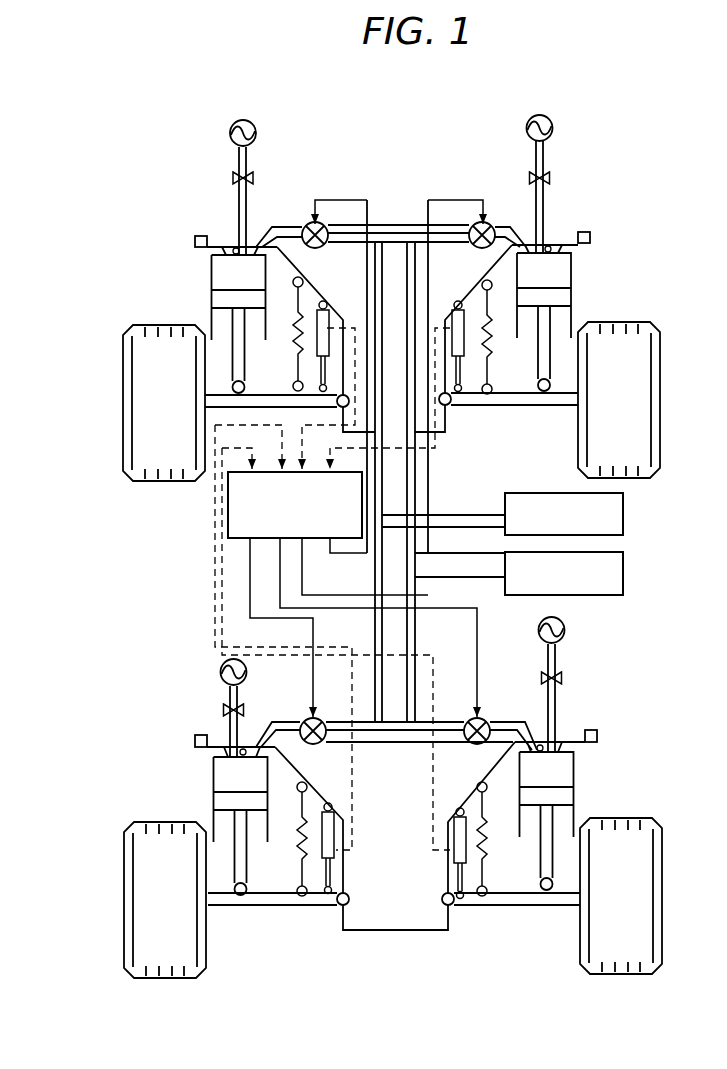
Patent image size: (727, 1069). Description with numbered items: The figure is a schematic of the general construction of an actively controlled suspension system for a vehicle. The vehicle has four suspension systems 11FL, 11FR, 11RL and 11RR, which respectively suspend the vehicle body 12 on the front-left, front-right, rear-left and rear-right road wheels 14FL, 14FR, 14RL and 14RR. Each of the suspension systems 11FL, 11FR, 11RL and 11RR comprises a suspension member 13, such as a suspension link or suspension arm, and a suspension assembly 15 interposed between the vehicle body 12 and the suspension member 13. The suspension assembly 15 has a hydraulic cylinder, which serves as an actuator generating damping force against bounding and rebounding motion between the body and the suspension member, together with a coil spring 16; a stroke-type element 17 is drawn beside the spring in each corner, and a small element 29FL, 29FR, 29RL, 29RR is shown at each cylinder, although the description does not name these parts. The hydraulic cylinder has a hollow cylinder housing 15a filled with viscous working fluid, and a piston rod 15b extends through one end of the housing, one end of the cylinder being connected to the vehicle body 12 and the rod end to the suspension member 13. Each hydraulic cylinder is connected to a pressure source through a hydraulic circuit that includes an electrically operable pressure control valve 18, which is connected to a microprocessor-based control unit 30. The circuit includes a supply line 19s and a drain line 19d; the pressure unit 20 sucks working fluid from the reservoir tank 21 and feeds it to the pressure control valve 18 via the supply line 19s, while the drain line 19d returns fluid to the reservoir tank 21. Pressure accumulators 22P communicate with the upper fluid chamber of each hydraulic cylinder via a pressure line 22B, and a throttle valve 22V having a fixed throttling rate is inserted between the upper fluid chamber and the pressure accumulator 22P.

The rear-right suspension system 11RR is at (190, 266).
The rear-left suspension system 11RL is at (598, 270).
The front-right suspension system 11FR is at (195, 780).
The front-left suspension system 11FL is at (588, 776).
The vehicle body 12 is at (444, 434).
The suspension member 13 is at (258, 403).
The rear-right road wheel 14RR is at (138, 352).
The rear-left road wheel 14RL is at (620, 323).
The front-right road wheel 14FR is at (140, 900).
The front-left road wheel 14FL is at (602, 975).
The suspension assembly 15 is at (212, 308).
The cylinder housing 15a is at (230, 253).
The piston rod 15b is at (548, 368).
The coil spring 16 is at (295, 338).
The shock absorber / stroke sensor 17 is at (328, 315).
The pressure control valve 18 is at (306, 223).
The supply line 19s is at (378, 614).
The drain line 19d is at (413, 636).
The pressure unit 20 is at (533, 493).
The reservoir tank 21 is at (505, 562).
The pressure accumulator 22P is at (254, 126).
The throttle valve 22V is at (235, 178).
The pressure line 22B is at (239, 207).
The rear right pressure sensor 29RR is at (196, 238).
The rear left pressure sensor 29RL is at (590, 236).
The front right pressure sensor 29FR is at (196, 742).
The front left pressure sensor 29FL is at (597, 737).
The control unit 30 is at (228, 512).